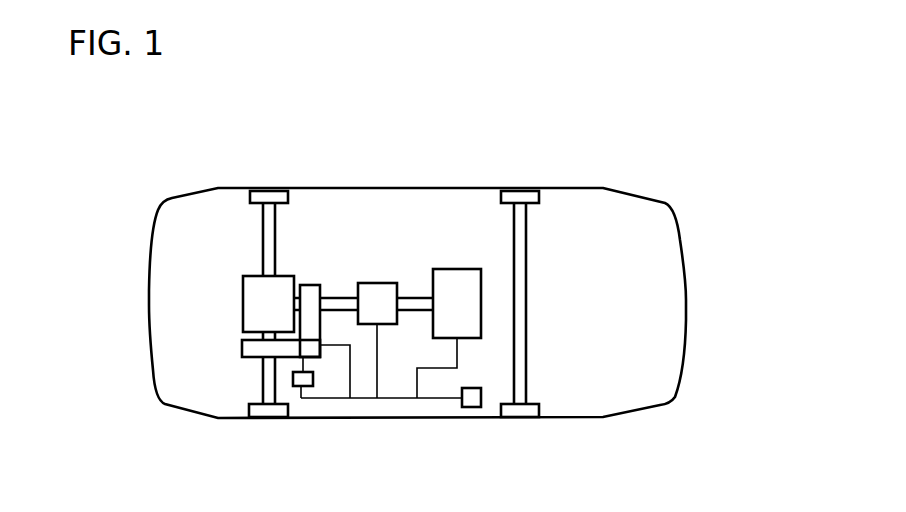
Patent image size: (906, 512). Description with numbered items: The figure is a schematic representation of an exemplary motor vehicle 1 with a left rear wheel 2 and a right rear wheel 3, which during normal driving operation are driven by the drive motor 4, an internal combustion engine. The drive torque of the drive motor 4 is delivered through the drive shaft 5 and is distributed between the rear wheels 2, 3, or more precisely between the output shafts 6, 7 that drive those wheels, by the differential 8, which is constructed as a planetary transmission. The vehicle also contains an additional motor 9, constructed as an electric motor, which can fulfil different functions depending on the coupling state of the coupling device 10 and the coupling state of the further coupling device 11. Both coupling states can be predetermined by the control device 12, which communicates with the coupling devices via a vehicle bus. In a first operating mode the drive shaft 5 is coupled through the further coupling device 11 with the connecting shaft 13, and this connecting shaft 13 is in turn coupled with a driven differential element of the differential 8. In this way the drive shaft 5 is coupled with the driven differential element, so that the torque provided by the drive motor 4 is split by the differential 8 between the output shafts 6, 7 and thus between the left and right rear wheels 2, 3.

The motor vehicle 1 is at (572, 133).
The left rear wheel 2 is at (258, 190).
The right rear wheel 3 is at (268, 418).
The drive motor 4 is at (456, 269).
The drive shaft 5 is at (415, 296).
The output shaft 6 is at (262, 244).
The output shaft 7 is at (262, 381).
The differential 8 is at (243, 300).
The additional motor 9 is at (301, 398).
The coupling device 10 is at (242, 343).
The further coupling device 11 is at (377, 283).
The control device 12 is at (471, 408).
The connecting shaft 13 is at (339, 296).